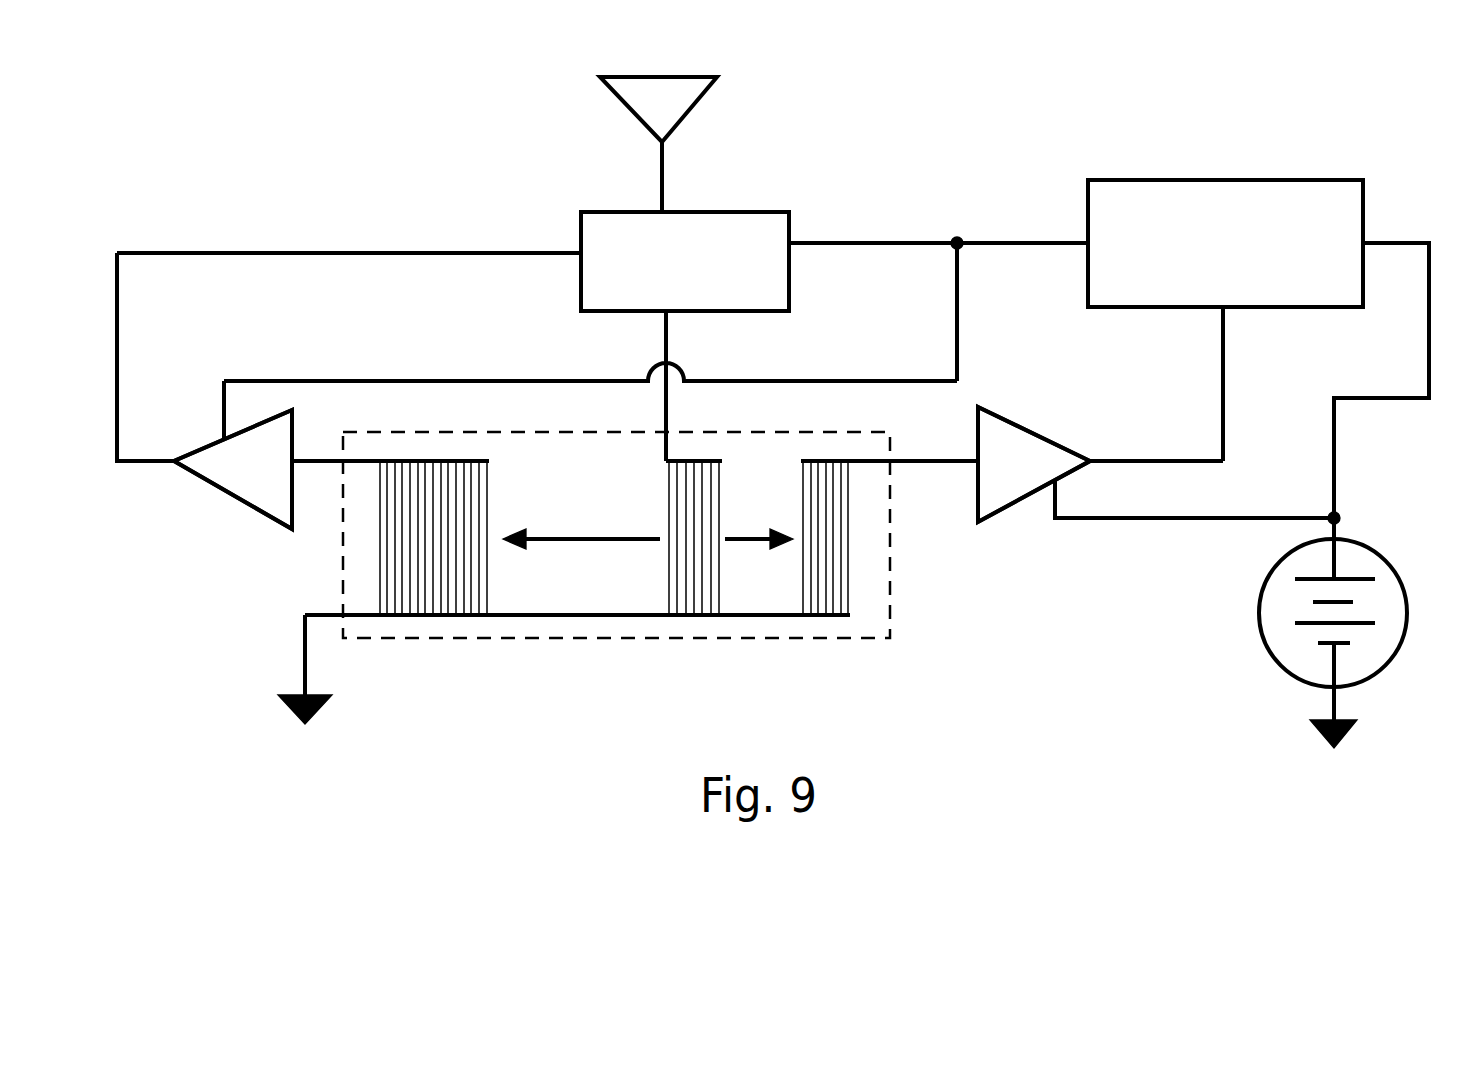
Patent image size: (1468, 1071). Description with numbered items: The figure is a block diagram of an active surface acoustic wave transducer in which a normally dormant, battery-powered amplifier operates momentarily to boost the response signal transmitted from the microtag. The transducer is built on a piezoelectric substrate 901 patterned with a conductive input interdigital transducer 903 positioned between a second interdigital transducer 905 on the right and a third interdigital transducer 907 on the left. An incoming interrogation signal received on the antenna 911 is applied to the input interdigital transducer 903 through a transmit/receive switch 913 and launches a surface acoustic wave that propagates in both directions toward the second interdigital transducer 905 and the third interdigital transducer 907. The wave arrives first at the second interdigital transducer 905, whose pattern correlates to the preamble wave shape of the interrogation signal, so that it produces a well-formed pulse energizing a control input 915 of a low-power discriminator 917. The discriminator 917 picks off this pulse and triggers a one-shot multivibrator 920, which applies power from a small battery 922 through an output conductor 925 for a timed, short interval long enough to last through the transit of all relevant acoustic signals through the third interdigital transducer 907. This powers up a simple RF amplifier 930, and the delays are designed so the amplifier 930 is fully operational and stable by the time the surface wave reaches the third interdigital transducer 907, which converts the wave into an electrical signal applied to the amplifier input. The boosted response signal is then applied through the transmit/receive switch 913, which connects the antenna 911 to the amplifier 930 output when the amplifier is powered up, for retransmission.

The piezoelectric substrate 901 is at (890, 593).
The input IDT1 903 is at (697, 460).
The IDT2 905 is at (818, 460).
The IDT3 907 is at (446, 460).
The antenna 911 is at (628, 112).
The transmit/receive switch 913 is at (753, 210).
The control input 915 is at (950, 465).
The low-power discriminator 917 is at (1045, 439).
The one-shot multivibrator 920 is at (1240, 180).
The battery 922 is at (1268, 655).
The output conductor 925 is at (912, 242).
The RF amplifier 930 is at (224, 490).